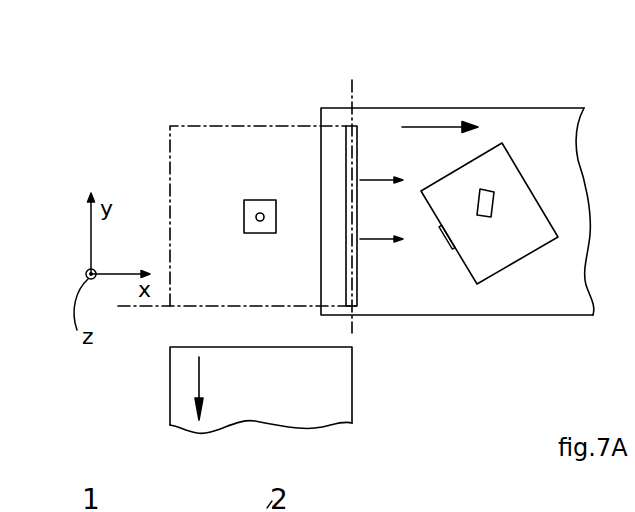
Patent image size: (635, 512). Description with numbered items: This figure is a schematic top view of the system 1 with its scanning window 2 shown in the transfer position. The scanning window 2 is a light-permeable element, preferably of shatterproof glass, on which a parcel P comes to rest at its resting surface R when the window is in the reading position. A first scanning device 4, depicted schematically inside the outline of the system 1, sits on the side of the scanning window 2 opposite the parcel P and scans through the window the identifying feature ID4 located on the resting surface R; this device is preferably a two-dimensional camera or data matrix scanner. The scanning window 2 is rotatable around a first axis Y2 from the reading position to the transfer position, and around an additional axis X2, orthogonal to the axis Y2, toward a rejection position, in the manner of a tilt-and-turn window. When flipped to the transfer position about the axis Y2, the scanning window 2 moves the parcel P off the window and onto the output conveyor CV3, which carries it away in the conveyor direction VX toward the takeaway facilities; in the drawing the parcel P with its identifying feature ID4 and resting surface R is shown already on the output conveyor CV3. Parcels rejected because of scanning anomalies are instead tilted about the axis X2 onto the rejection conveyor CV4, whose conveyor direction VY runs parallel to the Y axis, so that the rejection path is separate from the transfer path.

The system 1 is at (206, 113).
The scanning window 2 is at (346, 187).
The first scanning device 4 is at (244, 200).
The additional axis X2 is at (140, 308).
The first axis Y2 is at (352, 98).
The conveyor direction VX is at (430, 125).
The conveyor direction VY is at (217, 388).
The output conveyor CV3 is at (500, 127).
The rejection conveyor CV4 is at (305, 388).
The identifying feature ID4 is at (450, 234).
The resting surface R is at (445, 237).
The parcel P is at (520, 230).